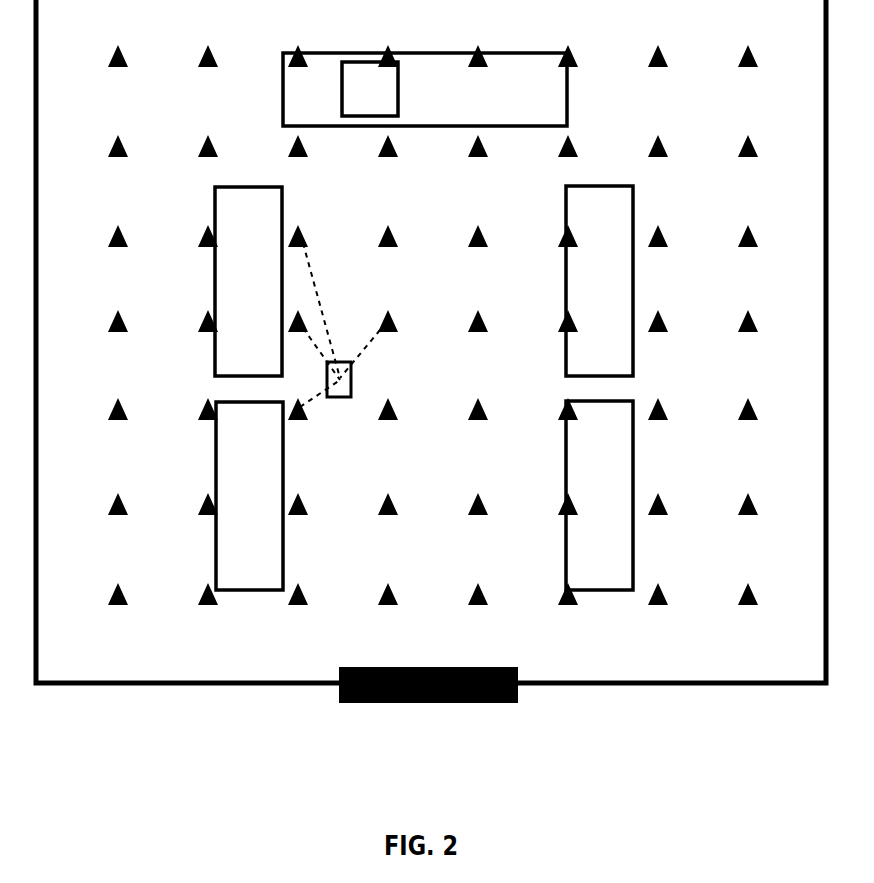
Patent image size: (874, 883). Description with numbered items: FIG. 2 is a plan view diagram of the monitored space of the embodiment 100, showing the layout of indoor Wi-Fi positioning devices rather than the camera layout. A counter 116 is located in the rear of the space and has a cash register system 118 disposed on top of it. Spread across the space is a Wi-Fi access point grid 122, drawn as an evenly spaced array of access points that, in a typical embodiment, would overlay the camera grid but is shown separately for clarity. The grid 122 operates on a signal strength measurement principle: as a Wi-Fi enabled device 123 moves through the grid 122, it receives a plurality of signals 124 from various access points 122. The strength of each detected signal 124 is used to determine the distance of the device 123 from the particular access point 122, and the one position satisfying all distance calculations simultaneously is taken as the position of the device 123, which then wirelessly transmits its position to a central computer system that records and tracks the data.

The embodiment 100 is at (650, 750).
The counter 116 is at (425, 89).
The cash register system 118 is at (370, 89).
The Wi-Fi access point grid 122 is at (205, 607).
The Wi-Fi enabled device 123 is at (351, 378).
The signals 124 is at (340, 320).